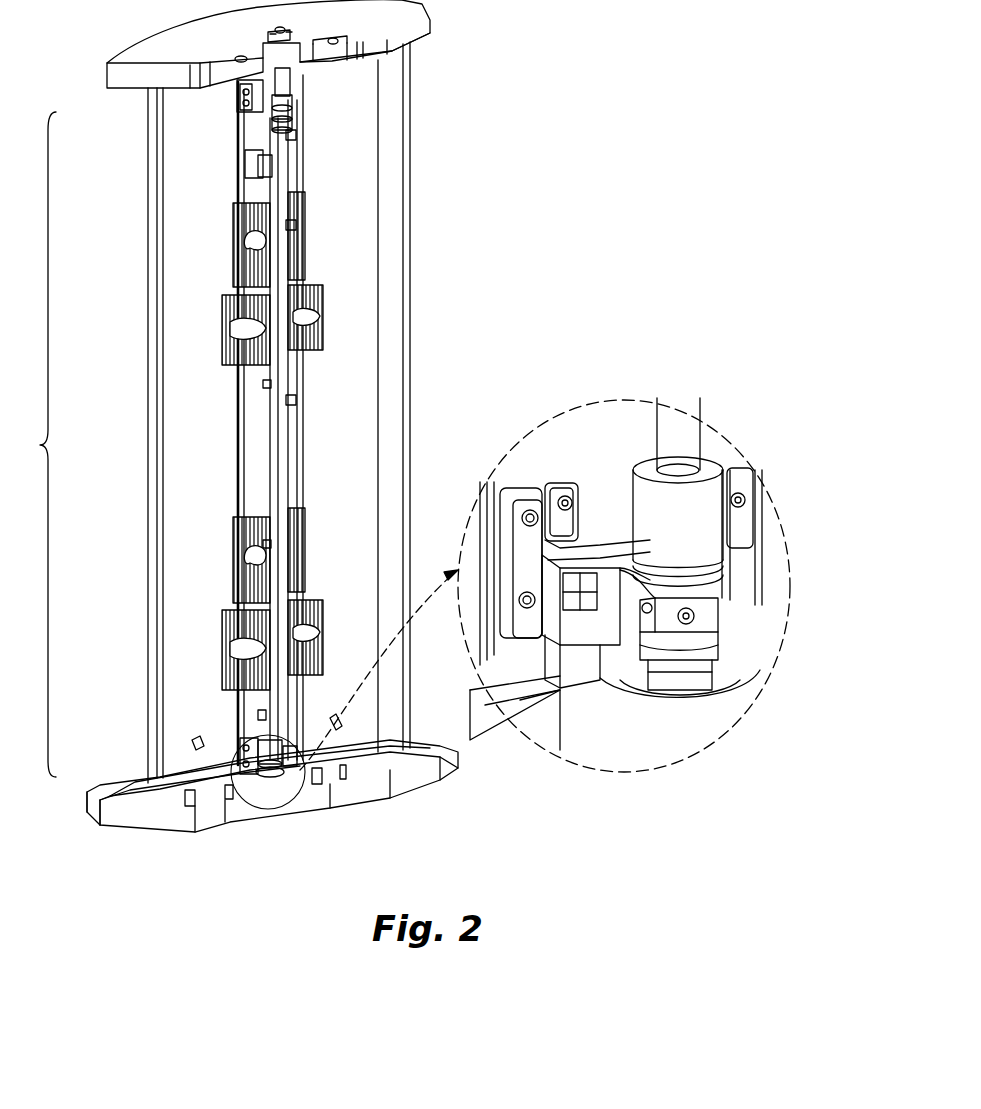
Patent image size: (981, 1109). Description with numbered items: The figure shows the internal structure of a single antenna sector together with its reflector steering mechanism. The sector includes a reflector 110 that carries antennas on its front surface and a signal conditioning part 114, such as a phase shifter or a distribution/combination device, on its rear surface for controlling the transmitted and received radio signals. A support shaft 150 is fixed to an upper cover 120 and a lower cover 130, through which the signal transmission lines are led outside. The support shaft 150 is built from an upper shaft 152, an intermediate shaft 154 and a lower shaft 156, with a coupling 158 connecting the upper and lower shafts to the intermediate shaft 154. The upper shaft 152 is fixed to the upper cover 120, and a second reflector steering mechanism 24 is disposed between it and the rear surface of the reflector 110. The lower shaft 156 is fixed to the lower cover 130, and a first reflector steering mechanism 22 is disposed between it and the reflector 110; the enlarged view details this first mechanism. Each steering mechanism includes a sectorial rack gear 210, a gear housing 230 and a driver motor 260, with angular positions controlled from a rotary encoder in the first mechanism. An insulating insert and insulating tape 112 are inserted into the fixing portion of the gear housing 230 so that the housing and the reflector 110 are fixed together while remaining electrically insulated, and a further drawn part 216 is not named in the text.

The first reflector steering mechanism 22 is at (586, 318).
The second reflector steering mechanism 24 is at (322, 97).
The reflector 110 is at (146, 583).
The insulating tape 112 is at (530, 490).
The signal conditioning part 114 is at (236, 240).
The upper cover 120 is at (135, 48).
The lower cover 130 is at (130, 815).
The support shaft 150 is at (29, 444).
The upper shaft 152 is at (237, 90).
The intermediate shaft 154 is at (272, 455).
The lower shaft 156 is at (137, 774).
The coupling 158 is at (278, 128).
The sectorial rack gear 210 is at (703, 612).
The collar 216 is at (705, 622).
The gear housing 230 is at (698, 648).
The driver motor 260 is at (580, 660).